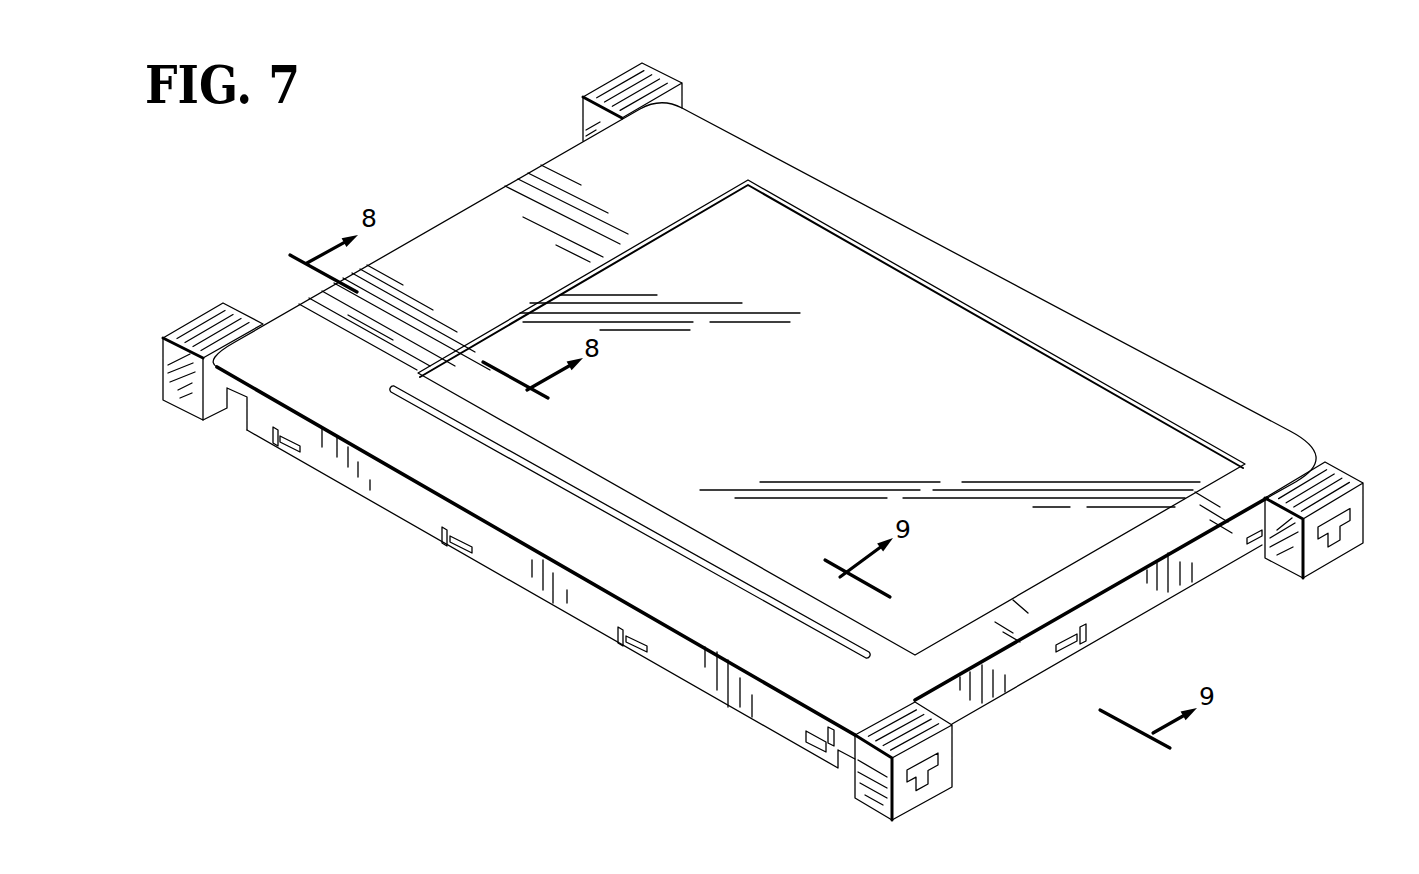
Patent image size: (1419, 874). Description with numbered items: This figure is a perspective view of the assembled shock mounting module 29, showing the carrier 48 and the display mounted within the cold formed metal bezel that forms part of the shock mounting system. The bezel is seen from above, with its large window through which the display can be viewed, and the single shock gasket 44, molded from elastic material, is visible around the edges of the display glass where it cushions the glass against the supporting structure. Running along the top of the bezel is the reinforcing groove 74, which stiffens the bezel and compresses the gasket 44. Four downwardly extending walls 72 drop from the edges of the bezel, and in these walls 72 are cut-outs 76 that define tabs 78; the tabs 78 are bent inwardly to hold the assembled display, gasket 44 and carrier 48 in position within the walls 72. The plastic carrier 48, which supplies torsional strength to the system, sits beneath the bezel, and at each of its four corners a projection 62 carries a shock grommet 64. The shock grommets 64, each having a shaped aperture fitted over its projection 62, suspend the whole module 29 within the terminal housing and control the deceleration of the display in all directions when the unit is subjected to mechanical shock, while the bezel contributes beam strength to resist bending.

The module 29 is at (1050, 246).
The shock gasket 44 is at (864, 218).
The carrier 48 is at (237, 407).
The projection 62 is at (1338, 543).
The shock grommet 64 is at (652, 80).
The downwardly extending walls 72 is at (583, 610).
The reinforcing groove 74 is at (542, 471).
The cut-outs 76 is at (440, 537).
The tabs 78 is at (457, 550).